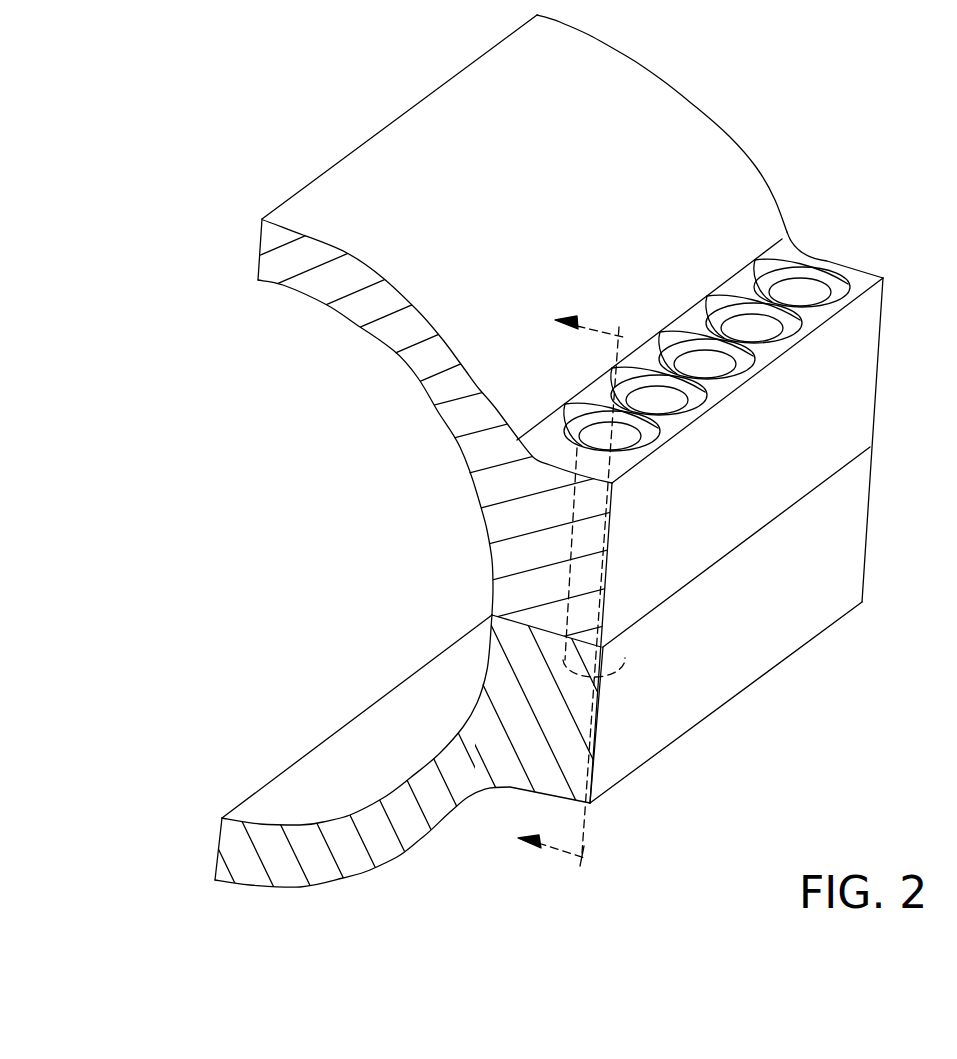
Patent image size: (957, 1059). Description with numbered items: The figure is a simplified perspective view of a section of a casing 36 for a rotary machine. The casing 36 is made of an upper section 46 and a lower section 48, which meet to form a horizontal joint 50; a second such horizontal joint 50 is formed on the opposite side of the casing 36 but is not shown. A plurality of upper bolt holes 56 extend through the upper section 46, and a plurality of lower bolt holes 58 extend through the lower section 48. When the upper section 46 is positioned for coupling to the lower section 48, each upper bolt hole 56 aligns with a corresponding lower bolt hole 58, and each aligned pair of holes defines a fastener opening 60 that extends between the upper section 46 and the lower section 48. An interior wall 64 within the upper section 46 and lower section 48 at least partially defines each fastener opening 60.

The casing 36 is at (254, 128).
The upper section 46 is at (427, 125).
The lower section 48 is at (280, 807).
The horizontal joint 50 is at (504, 621).
The upper bolt hole 56 is at (594, 563).
The lower bolt hole 58 is at (573, 648).
The fastener opening 60 is at (603, 436).
The interior wall 64 is at (637, 440).